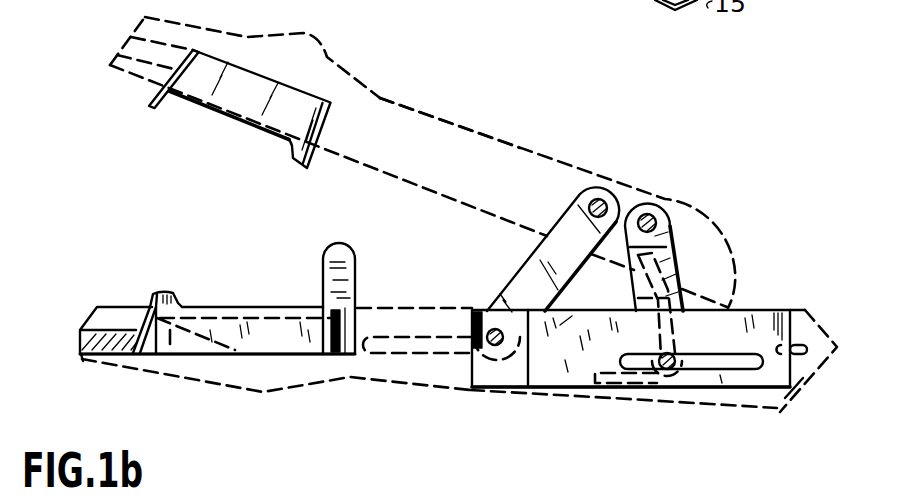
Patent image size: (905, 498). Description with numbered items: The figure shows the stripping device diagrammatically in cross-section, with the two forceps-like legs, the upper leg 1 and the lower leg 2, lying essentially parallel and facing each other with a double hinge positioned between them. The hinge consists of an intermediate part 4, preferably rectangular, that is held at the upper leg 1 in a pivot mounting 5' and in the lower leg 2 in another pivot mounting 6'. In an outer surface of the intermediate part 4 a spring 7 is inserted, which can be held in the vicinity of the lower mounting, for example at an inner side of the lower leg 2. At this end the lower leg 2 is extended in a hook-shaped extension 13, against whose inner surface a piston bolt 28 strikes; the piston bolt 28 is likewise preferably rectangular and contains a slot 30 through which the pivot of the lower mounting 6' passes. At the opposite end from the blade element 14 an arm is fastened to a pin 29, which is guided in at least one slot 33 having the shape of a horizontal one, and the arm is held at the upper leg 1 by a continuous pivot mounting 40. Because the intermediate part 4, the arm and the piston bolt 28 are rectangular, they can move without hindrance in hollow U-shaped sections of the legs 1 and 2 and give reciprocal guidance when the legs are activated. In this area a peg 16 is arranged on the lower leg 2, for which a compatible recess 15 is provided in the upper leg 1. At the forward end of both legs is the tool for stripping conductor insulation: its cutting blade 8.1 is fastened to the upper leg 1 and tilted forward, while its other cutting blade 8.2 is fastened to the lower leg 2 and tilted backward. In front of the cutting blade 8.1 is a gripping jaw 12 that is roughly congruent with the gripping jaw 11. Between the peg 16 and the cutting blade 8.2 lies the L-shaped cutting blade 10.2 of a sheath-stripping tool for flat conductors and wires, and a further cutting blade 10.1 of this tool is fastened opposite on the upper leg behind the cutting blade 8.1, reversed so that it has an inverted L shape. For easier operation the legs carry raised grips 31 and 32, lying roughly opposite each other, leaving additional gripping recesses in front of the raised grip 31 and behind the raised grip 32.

The upper leg 1 is at (478, 128).
The lower leg 2 is at (612, 398).
The intermediate part 4 is at (665, 262).
The pivot mounting 5' is at (659, 198).
The pivot mounting 6' is at (638, 351).
The spring 7 is at (680, 280).
The cutting blade 8.1 is at (148, 103).
The cutting blade 8.2 is at (142, 300).
The cutting blade 10.1 is at (265, 126).
The L-shaped cutting blade 10.2 is at (288, 312).
The gripping jaw 11 is at (115, 58).
The gripping jaw 12 is at (103, 320).
The hook-shaped extension 13 is at (802, 380).
The blade element 14 is at (816, 322).
The recess 15 is at (388, 94).
The peg 16 is at (346, 258).
The piston bolt 28 is at (578, 326).
The pin 29 is at (470, 323).
The slot 30 is at (716, 360).
The raised grip 31 is at (301, 40).
The raised grip 32 is at (278, 400).
The slot 33 is at (462, 352).
The continuous pivot mounting 40 is at (580, 197).